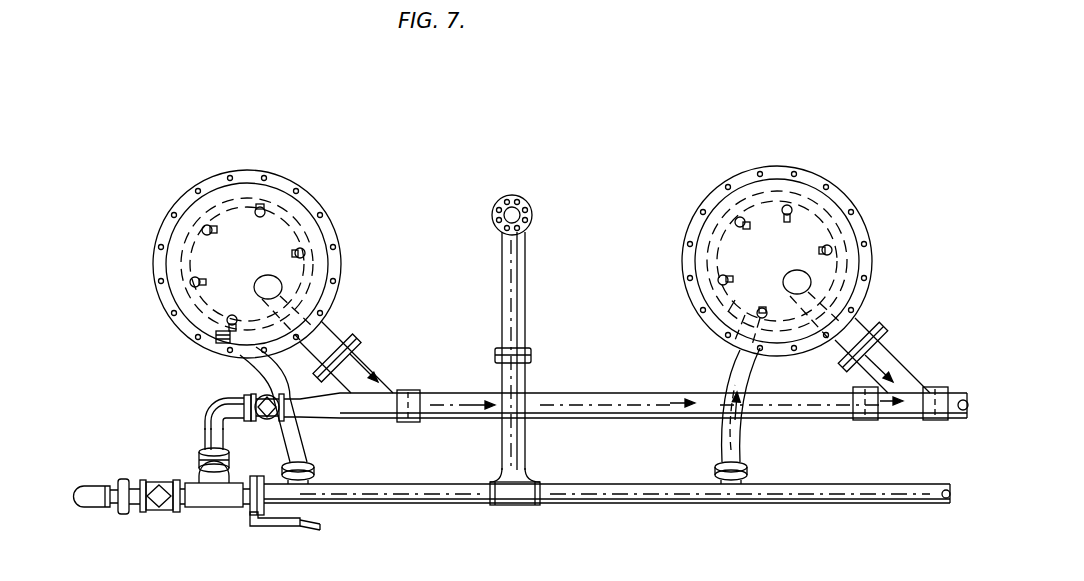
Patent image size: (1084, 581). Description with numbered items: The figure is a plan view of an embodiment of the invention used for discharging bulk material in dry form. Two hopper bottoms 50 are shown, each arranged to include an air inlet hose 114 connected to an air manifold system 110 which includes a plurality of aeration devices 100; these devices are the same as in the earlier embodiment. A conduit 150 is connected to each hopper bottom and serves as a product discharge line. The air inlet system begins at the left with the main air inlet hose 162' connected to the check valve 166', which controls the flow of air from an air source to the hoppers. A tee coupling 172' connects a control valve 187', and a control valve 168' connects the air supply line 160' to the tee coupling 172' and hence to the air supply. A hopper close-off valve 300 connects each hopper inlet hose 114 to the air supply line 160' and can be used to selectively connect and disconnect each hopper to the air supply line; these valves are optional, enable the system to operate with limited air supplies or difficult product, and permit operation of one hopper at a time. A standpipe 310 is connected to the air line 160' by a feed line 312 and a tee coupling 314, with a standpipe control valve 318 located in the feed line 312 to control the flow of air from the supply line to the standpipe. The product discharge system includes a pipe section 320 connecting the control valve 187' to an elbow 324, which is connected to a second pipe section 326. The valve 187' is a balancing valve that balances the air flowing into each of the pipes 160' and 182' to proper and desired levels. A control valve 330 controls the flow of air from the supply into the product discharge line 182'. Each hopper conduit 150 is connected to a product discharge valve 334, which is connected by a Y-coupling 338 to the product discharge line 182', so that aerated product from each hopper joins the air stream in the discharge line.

The hopper bottom 50 is at (337, 210).
The aeration device 100 is at (312, 252).
The air manifold system 110 is at (200, 312).
The air inlet hose 114 is at (243, 375).
The conduit 150 is at (318, 323).
The air supply line 160' is at (607, 523).
The main air inlet hose 162' is at (98, 484).
The check valve 166' is at (133, 515).
The control valve 168' is at (265, 518).
The tee coupling 172' is at (198, 505).
The product discharge line 182' is at (626, 384).
The control valve 187' is at (185, 452).
The hopper close-off valve 300 is at (312, 474).
The standpipe 310 is at (532, 203).
The feed line 312 is at (525, 310).
The tee coupling 314 is at (522, 493).
The standpipe control valve 318 is at (532, 348).
The pipe section 320 is at (208, 437).
The elbow 324 is at (220, 407).
The second pipe section 326 is at (252, 395).
The control valve 330 is at (265, 420).
The product discharge valve 334 is at (353, 346).
The Y-coupling 338 is at (393, 382).